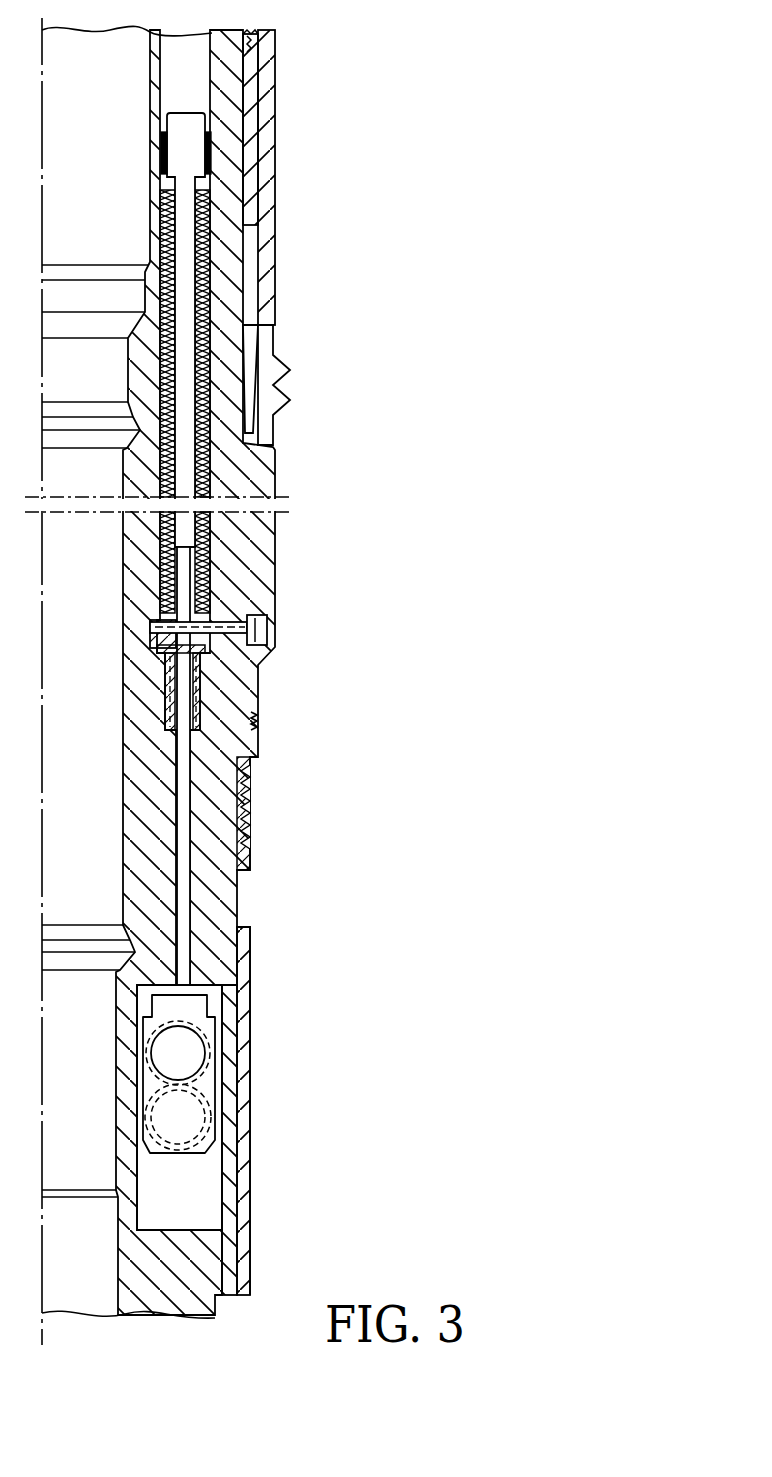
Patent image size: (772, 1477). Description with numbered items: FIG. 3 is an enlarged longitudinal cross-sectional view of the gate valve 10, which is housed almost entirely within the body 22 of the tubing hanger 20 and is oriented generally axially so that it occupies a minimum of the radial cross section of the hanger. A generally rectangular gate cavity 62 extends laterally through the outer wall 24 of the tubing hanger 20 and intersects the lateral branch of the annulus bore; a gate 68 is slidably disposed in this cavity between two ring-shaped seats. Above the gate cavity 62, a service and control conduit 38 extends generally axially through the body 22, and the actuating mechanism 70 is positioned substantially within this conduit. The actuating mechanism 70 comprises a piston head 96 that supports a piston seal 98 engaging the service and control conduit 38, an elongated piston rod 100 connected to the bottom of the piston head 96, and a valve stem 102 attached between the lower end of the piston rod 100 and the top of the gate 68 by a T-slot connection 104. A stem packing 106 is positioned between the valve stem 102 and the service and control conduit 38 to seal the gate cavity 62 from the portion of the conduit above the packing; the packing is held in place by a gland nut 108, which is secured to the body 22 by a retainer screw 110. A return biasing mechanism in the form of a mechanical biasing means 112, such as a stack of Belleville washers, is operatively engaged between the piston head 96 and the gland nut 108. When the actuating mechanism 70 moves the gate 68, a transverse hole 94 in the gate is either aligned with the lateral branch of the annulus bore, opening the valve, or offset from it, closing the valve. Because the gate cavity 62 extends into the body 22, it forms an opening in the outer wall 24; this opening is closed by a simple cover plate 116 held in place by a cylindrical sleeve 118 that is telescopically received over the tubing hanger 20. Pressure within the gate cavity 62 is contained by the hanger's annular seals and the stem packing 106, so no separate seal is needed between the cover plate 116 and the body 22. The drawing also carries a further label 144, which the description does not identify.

The gate valve 10 is at (112, 1208).
The tubing hanger 20 is at (282, 545).
The body 22 is at (227, 890).
The outer wall 24 is at (237, 917).
The service and control conduit 38 is at (214, 36).
The gate cavity 62 is at (197, 1204).
The gate 68 is at (215, 1083).
The actuating mechanism 70 is at (256, 578).
The transverse hole 94 is at (205, 1048).
The piston head 96 is at (203, 182).
The piston seal 98 is at (212, 144).
The piston rod 100 is at (183, 347).
The valve stem 102 is at (183, 803).
The T-slot connection 104 is at (224, 1012).
The stem packing 106 is at (198, 688).
The gland nut 108 is at (152, 639).
The retainer screw 110 is at (268, 632).
The mechanical biasing means 112 is at (208, 472).
The cover plate 116 is at (228, 1125).
The cylindrical sleeve 118 is at (250, 1160).
The passage 144 is at (208, 1230).